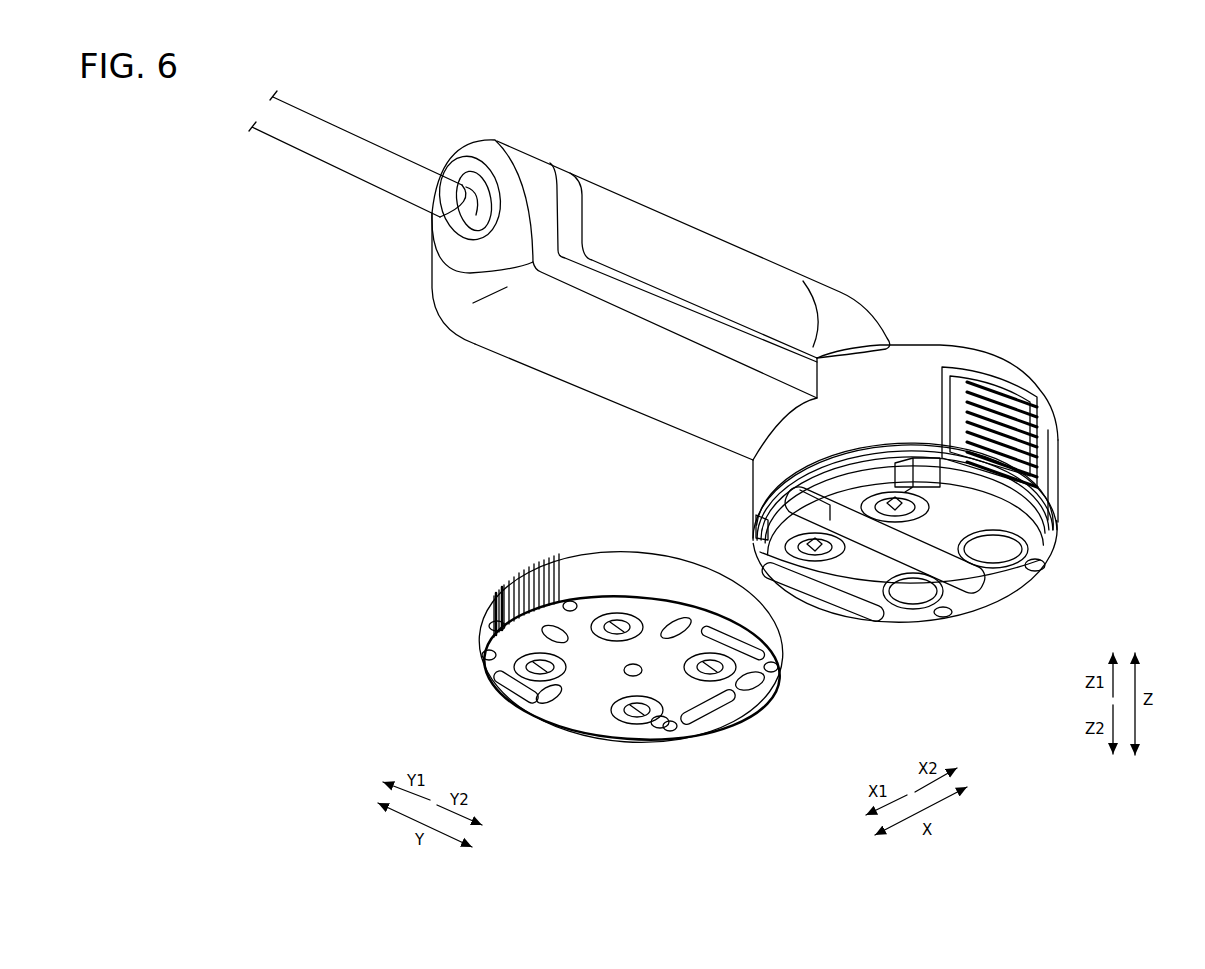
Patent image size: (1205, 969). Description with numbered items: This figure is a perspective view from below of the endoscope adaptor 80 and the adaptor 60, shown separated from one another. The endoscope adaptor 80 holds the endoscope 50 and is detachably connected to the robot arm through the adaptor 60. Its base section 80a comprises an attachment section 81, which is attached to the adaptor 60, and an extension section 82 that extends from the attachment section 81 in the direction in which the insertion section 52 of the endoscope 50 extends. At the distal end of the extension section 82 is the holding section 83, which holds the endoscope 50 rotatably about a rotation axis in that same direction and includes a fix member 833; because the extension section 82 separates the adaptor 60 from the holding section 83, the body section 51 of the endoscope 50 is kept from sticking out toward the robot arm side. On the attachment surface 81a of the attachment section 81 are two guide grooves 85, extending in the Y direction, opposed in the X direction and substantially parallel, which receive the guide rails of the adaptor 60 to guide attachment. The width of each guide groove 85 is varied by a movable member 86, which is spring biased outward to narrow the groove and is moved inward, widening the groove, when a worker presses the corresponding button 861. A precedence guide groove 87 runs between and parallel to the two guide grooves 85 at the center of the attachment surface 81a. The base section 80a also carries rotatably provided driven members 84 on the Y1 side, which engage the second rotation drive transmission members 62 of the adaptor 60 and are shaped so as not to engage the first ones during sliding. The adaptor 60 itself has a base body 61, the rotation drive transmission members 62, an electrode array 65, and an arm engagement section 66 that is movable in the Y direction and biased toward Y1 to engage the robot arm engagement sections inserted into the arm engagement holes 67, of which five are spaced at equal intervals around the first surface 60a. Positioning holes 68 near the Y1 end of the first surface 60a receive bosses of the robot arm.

The endoscope 50 is at (749, 216).
The body section 51 is at (770, 258).
The insertion section 52 is at (373, 142).
The adaptor 60 is at (474, 582).
The first surface 60a is at (618, 692).
The base body 61 is at (570, 573).
The rotation drive transmission members 62 is at (520, 706).
The electrode array 65 is at (705, 722).
The arm engagement section 66 is at (520, 582).
The arm engagement holes 67 is at (668, 600).
The positioning holes 68 is at (575, 600).
The endoscope adaptor 80 is at (991, 325).
The base section 80a is at (664, 446).
The attachment section 81 is at (1022, 378).
The attachment surface 81a is at (870, 564).
The extension section 82 is at (610, 388).
The holding section 83 is at (512, 147).
The fix member 833 is at (453, 175).
The driven members 84 is at (919, 460).
The guide grooves 85 is at (808, 584).
The movable members 86 is at (838, 586).
The precedence guide groove 87 is at (756, 481).
The button 861 is at (1040, 455).